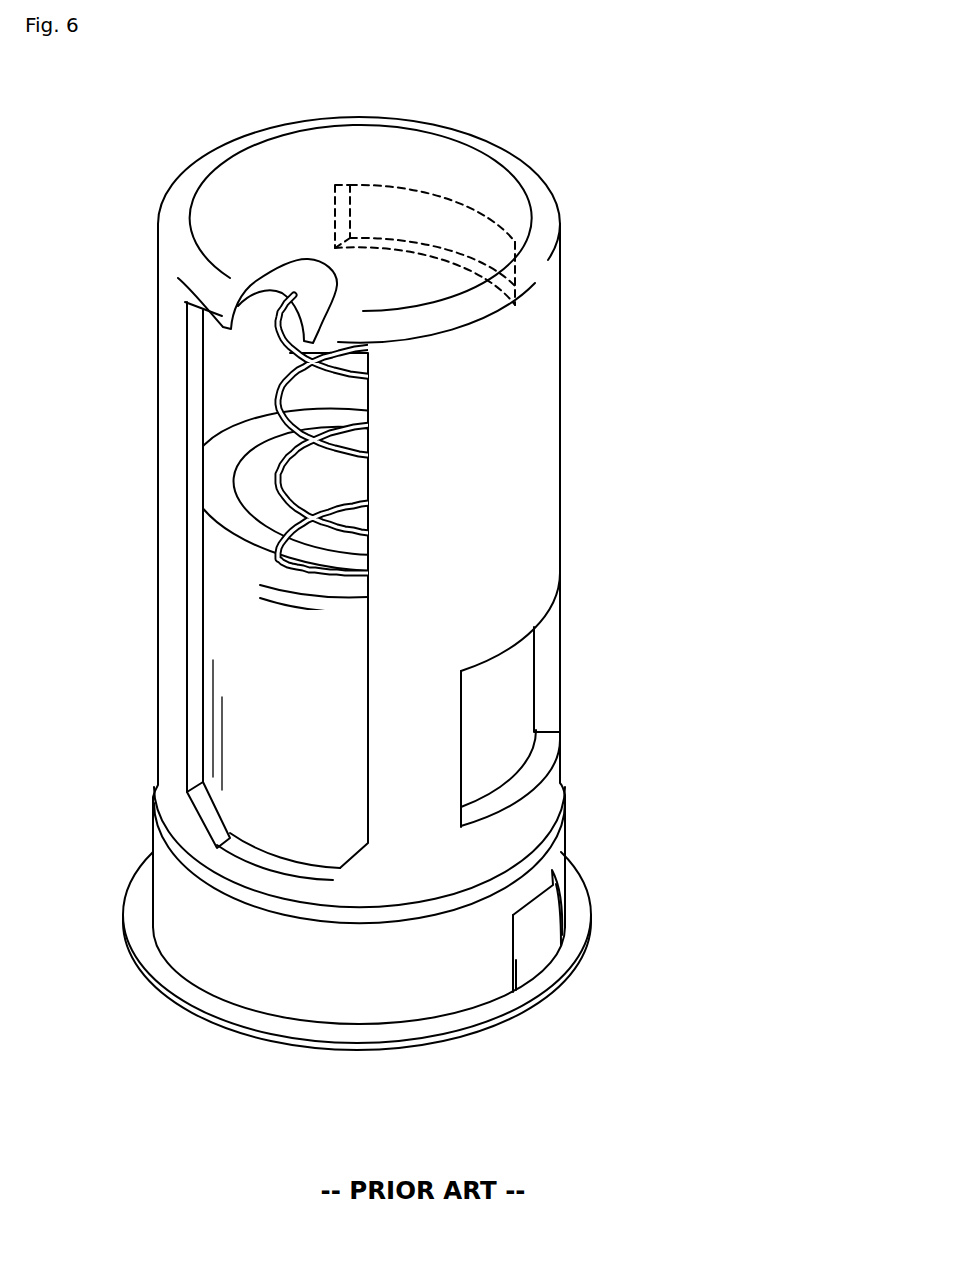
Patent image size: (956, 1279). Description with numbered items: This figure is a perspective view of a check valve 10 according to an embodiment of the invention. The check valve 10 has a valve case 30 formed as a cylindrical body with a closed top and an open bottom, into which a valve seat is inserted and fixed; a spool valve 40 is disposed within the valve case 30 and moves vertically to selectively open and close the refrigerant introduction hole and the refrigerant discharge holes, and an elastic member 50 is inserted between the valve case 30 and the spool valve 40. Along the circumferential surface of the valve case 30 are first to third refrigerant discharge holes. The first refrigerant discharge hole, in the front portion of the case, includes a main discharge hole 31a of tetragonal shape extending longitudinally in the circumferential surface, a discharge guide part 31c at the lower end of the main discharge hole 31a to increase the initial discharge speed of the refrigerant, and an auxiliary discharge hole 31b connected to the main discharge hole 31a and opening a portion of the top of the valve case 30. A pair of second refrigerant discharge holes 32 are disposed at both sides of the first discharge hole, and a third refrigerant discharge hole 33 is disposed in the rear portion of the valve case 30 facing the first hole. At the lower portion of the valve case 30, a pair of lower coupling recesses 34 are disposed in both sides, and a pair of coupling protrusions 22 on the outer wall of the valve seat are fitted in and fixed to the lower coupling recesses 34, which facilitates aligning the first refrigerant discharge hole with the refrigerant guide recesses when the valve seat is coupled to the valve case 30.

The check valve 10 is at (180, 160).
The valve case 30 is at (520, 437).
The main discharge hole 31a is at (195, 502).
The auxiliary discharge hole 31b is at (270, 278).
The discharge guide part 31c is at (210, 820).
The second refrigerant discharge hole 32 is at (545, 670).
The third refrigerant discharge hole 33 is at (478, 228).
The lower coupling recess 34 is at (557, 887).
The coupling protrusion 22 is at (533, 945).
The spool valve 40 is at (228, 610).
The elastic member 50 is at (277, 392).